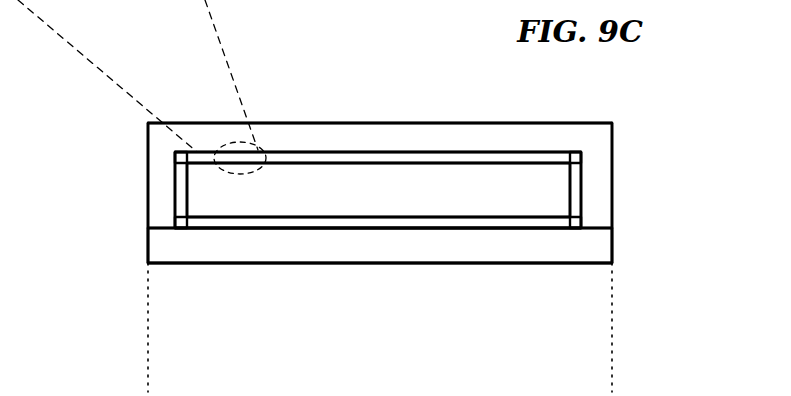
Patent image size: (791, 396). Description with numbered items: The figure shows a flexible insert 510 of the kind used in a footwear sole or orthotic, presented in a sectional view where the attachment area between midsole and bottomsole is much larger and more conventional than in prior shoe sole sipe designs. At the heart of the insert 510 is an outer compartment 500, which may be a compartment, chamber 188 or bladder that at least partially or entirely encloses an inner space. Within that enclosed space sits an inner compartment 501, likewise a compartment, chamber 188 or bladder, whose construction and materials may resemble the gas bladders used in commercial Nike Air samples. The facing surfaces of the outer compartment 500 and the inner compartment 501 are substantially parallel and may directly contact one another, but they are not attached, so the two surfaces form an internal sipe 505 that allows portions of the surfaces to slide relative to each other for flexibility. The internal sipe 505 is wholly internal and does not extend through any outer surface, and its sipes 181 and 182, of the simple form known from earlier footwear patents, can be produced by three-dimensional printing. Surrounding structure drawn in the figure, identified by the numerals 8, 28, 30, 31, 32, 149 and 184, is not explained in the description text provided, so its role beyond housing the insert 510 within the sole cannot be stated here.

The housing 8 is at (162, 230).
The light engine assembly 28 is at (648, 186).
The housing top wall 30 is at (325, 122).
The housing bottom wall 31 is at (360, 264).
The housing side wall 32 is at (147, 160).
The lower chamber 149 is at (592, 247).
The sipe 181 is at (182, 198).
The sipe 182 is at (533, 282).
The fold region 184 is at (213, 133).
The chamber 188 is at (482, 168).
The outer compartment 500 is at (176, 152).
The inner compartment 501 is at (458, 163).
The internal sipe 505 is at (102, 210).
The flexible insert 510 is at (304, 246).